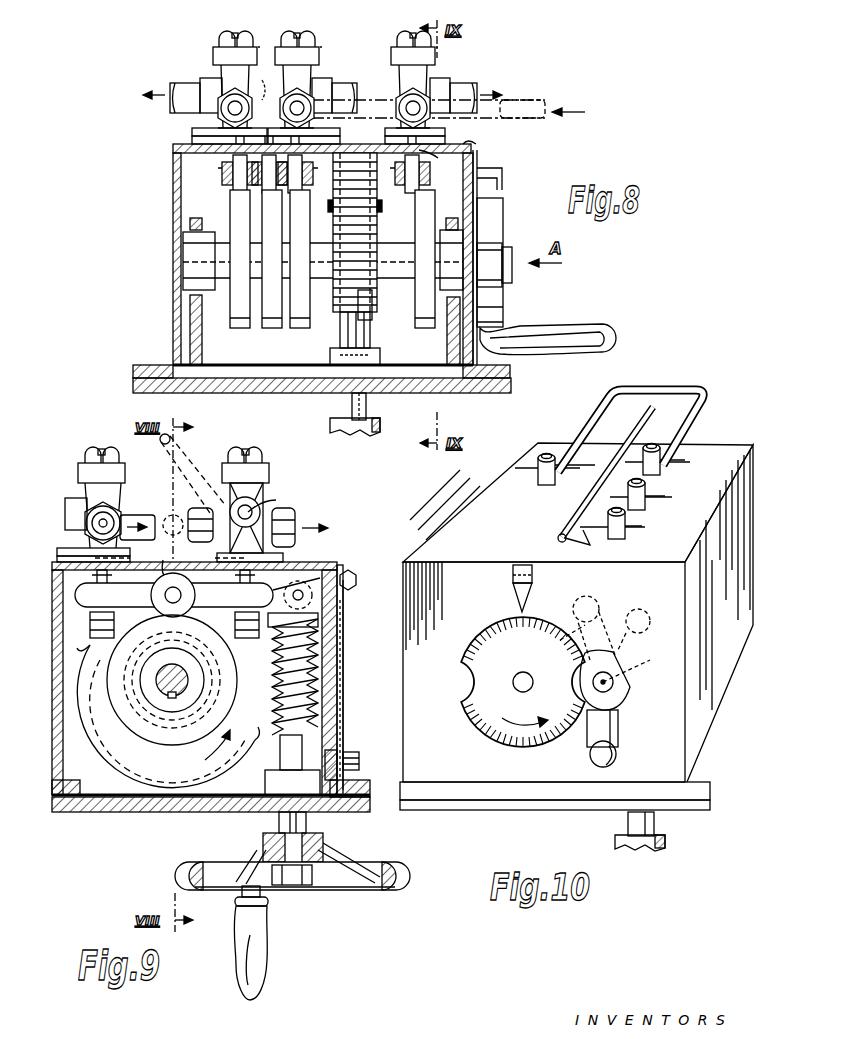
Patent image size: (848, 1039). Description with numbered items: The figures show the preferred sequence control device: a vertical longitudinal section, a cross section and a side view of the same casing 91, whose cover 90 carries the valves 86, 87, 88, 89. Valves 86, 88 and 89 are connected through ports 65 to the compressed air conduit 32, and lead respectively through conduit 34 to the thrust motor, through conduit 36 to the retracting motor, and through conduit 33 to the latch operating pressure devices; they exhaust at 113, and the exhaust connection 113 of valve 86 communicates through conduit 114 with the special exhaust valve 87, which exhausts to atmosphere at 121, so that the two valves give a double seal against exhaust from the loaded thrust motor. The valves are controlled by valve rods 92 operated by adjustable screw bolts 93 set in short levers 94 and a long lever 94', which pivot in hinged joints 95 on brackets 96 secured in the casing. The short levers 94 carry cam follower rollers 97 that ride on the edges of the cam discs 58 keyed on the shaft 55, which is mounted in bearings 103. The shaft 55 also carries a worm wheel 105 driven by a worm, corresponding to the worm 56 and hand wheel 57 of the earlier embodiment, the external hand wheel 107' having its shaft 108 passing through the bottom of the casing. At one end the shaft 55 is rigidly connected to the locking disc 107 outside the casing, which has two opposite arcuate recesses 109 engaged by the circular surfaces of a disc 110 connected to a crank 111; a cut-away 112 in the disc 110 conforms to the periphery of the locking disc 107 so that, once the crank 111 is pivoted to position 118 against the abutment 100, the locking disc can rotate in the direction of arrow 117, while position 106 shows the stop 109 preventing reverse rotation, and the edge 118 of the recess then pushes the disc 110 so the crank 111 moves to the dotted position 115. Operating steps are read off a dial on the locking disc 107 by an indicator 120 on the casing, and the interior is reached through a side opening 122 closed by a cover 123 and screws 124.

In FIG. 8, the conduit 32 is at (505, 100).
In FIG. 9, the conduit 32 is at (176, 515).
In FIG. 10, the conduit 32 is at (640, 425).
In FIG. 8, the conduit 33 is at (466, 88).
In FIG. 9, the conduit 33 is at (271, 500).
In FIG. 8, the conduit 34 is at (180, 98).
In FIG. 8, the conduit 36 is at (348, 90).
In FIG. 8, the shaft 55 is at (372, 300).
In FIG. 9, the shaft 55 is at (168, 693).
In FIG. 8, the worm 56 is at (372, 320).
In FIG. 9, the hand wheel 57 is at (260, 955).
In FIG. 8, the cam discs 58 is at (294, 345).
In FIG. 9, the cam discs 58 is at (232, 672).
In FIG. 9, the ports 65 is at (200, 510).
In FIG. 10, the ports 65 is at (602, 505).
In FIG. 8, the valve 86 is at (218, 72).
In FIG. 10, the valve 86 is at (661, 470).
In FIG. 8, the special exhaust valve 87 is at (268, 92).
In FIG. 9, the special exhaust valve 87 is at (112, 498).
In FIG. 10, the special exhaust valve 87 is at (542, 482).
In FIG. 8, the valve 88 is at (312, 75).
In FIG. 10, the valve 88 is at (646, 503).
In FIG. 8, the valve 89 is at (396, 72).
In FIG. 9, the valve 89 is at (262, 495).
In FIG. 10, the valve 89 is at (626, 538).
In FIG. 8, the cover 90 is at (473, 134).
In FIG. 8, the casing 91 is at (173, 176).
In FIG. 10, the casing 91 is at (405, 618).
In FIG. 9, the valve rods 92 is at (126, 549).
In FIG. 8, the adjustable screw bolts 93 is at (437, 159).
In FIG. 9, the adjustable screw bolts 93 is at (108, 577).
In FIG. 8, the short levers 94 is at (314, 166).
In FIG. 9, the short levers 94 is at (197, 605).
In FIG. 9, the long lever 94' is at (115, 618).
In FIG. 9, the hinged joints 95 is at (297, 578).
In FIG. 9, the brackets 96 is at (345, 572).
In FIG. 8, the cam follower rollers 97 is at (266, 155).
In FIG. 9, the cam follower rollers 97 is at (166, 559).
In FIG. 10, the abutment 100 is at (575, 622).
In FIG. 8, the bearings 103 is at (190, 243).
In FIG. 8, the worm wheel 105 is at (342, 330).
In FIG. 9, the worm wheel 105 is at (110, 755).
In FIG. 9, the position 106 is at (318, 662).
In FIG. 8, the locking disc 107 is at (512, 262).
In FIG. 9, the locking disc 107 is at (292, 861).
In FIG. 10, the locking disc 107 is at (511, 682).
In FIG. 8, the hand wheel 107' is at (355, 434).
In FIG. 10, the hand wheel 107' is at (665, 844).
In FIG. 8, the shaft 108 is at (352, 407).
In FIG. 9, the shaft 108 is at (281, 822).
In FIG. 10, the shaft 108 is at (660, 822).
In FIG. 8, the arcuate recesses 109 is at (497, 268).
In FIG. 10, the arcuate recesses 109 is at (470, 664).
In FIG. 10, the disc 110 is at (625, 694).
In FIG. 8, the crank 111 is at (542, 330).
In FIG. 10, the crank 111 is at (615, 755).
In FIG. 10, the cut-away 112 is at (629, 676).
In FIG. 8, the exhaust connection 113 is at (331, 68).
In FIG. 9, the exhaust connection 113 is at (293, 518).
In FIG. 10, the exhaust connection 113 is at (672, 460).
In FIG. 9, the conduit 114 is at (138, 518).
In FIG. 10, the conduit 114 is at (690, 392).
In FIG. 10, the dotted position 115 is at (638, 607).
In FIG. 9, the arrow 117 is at (222, 760).
In FIG. 10, the arrow 117 is at (520, 740).
In FIG. 10, the position 118 is at (590, 602).
In FIG. 8, the indicator 120 is at (503, 183).
In FIG. 10, the indicator 120 is at (515, 592).
In FIG. 9, the exhaust connection 121 is at (110, 512).
In FIG. 10, the exhaust connection 121 is at (530, 467).
In FIG. 9, the side opening 122 is at (343, 685).
In FIG. 9, the cover 123 is at (343, 710).
In FIG. 9, the screws 124 is at (355, 752).